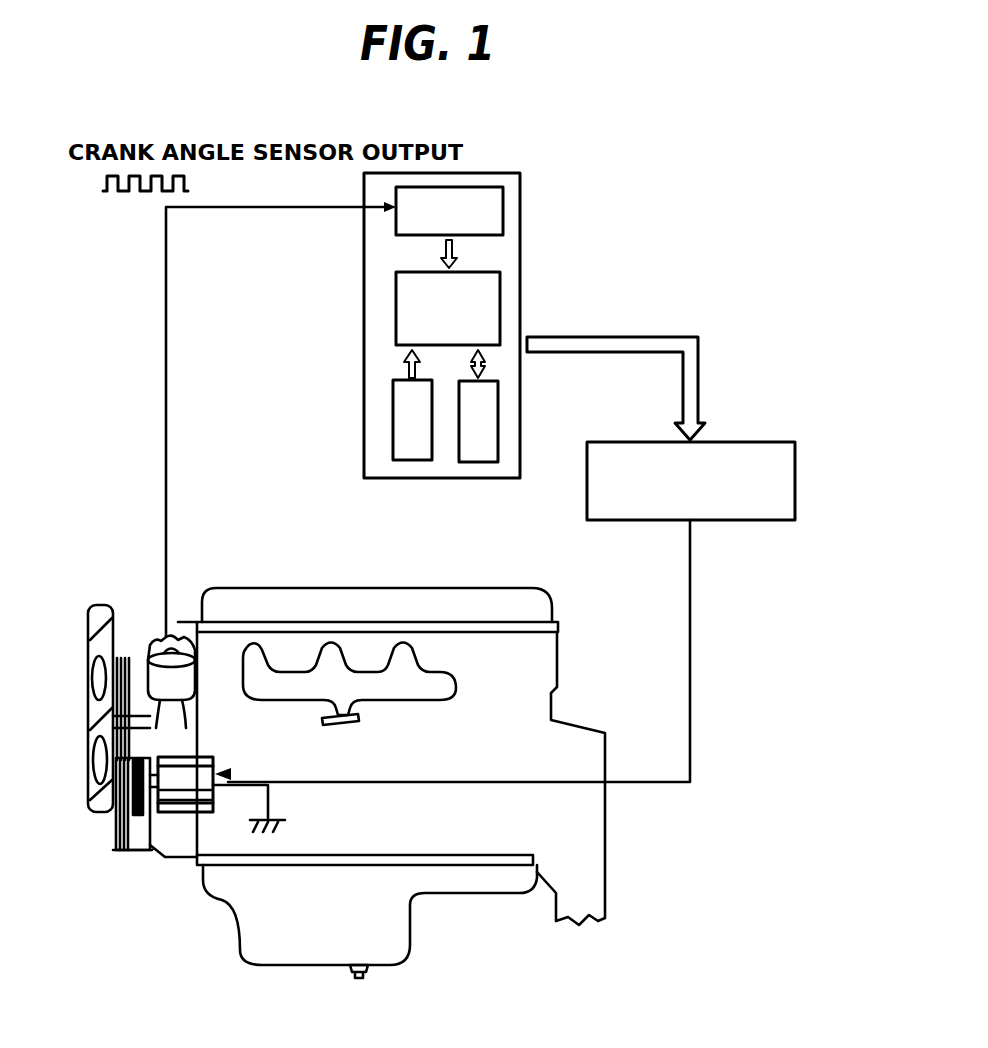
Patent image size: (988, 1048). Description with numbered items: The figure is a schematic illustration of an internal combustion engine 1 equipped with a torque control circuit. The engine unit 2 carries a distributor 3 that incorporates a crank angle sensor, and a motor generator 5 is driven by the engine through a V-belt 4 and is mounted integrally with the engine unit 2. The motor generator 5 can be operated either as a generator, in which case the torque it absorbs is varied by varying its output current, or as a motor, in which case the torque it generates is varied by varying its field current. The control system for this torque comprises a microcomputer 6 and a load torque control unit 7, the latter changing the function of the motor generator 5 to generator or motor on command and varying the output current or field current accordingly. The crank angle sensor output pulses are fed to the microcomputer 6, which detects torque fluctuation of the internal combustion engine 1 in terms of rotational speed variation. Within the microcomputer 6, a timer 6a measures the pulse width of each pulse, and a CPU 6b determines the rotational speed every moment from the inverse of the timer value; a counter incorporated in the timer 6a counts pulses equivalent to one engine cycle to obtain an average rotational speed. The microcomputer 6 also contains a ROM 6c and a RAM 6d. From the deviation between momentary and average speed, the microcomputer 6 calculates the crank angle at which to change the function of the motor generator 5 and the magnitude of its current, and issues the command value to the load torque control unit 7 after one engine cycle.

The internal combustion engine 1 is at (428, 598).
The engine unit 2 is at (545, 712).
The distributor 3 is at (160, 635).
The V-belt 4 is at (124, 856).
The motor generator 5 is at (183, 814).
The microcomputer 6 is at (472, 405).
The timer 6a is at (503, 230).
The CPU 6b is at (500, 292).
The ROM 6c is at (393, 392).
The RAM 6d is at (498, 397).
The load torque control unit 7 is at (770, 442).